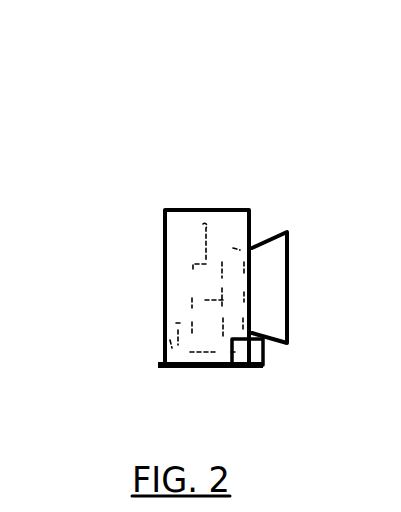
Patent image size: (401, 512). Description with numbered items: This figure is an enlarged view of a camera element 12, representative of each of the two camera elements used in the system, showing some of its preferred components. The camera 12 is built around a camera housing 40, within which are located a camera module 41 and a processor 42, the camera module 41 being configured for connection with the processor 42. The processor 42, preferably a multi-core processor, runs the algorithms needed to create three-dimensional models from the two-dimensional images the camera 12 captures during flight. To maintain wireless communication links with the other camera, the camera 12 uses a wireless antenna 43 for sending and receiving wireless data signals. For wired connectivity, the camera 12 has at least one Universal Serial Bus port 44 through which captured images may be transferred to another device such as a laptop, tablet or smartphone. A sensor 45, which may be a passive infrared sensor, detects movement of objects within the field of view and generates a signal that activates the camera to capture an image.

The camera element 12 is at (123, 173).
The camera housing 40 is at (177, 222).
The camera module 41 is at (228, 257).
The processor 42 is at (200, 300).
The wireless antenna 43 is at (202, 262).
The Universal Serial Bus (USB) port 44 is at (177, 338).
The sensor 45 is at (265, 353).